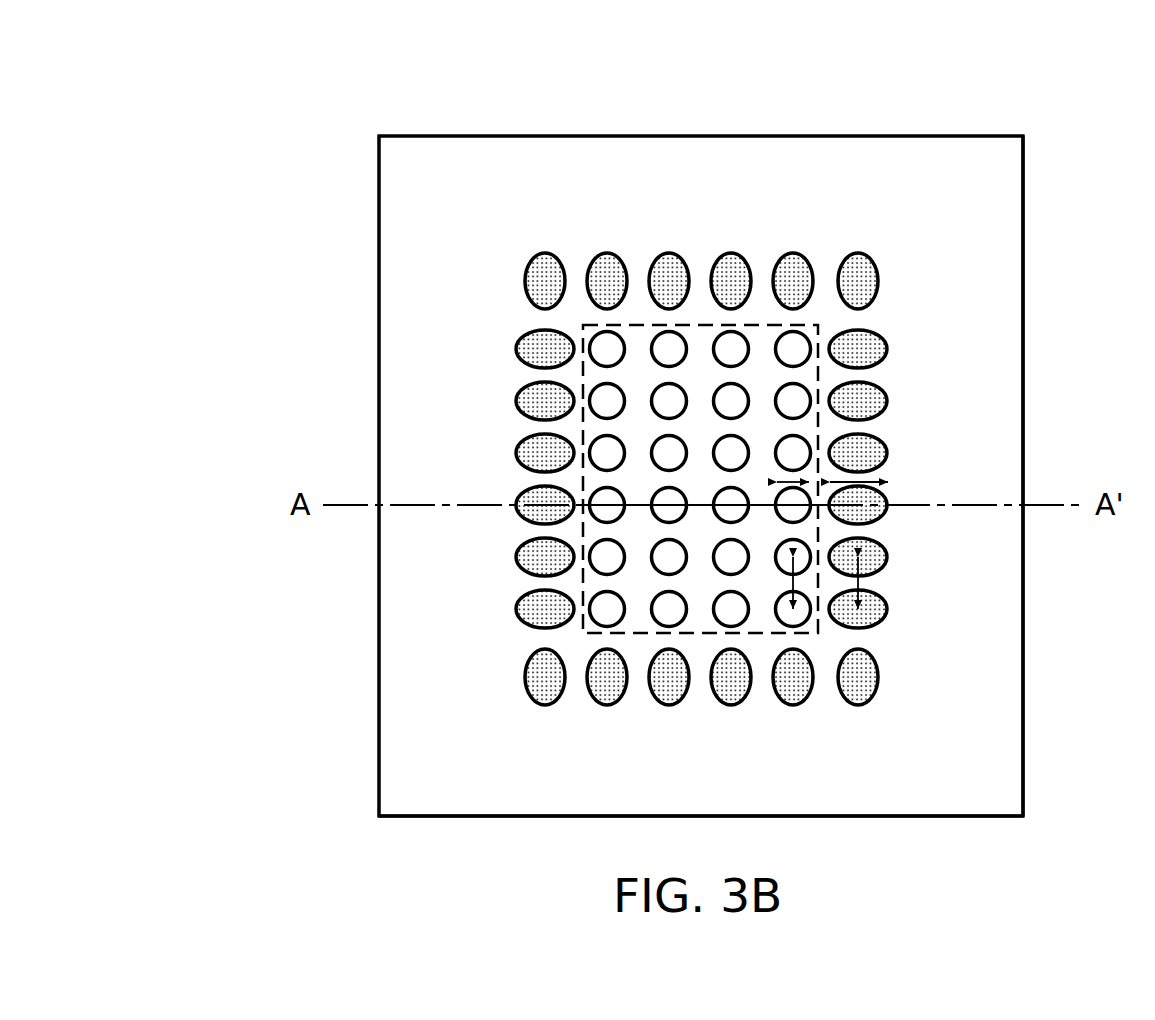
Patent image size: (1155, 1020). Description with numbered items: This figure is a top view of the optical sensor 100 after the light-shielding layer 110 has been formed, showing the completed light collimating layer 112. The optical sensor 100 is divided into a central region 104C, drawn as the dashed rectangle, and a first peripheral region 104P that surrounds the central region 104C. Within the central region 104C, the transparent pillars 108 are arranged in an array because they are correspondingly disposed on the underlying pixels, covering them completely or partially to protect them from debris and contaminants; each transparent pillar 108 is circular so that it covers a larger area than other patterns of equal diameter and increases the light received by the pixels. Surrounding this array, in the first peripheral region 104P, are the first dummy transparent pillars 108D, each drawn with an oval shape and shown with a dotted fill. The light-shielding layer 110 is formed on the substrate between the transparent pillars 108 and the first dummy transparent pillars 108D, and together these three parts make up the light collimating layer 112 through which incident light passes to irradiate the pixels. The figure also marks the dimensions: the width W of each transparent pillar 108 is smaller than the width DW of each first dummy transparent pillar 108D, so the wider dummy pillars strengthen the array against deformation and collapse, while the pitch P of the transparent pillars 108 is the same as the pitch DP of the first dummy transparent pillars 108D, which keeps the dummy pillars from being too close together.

The optical sensor 100 is at (328, 116).
The first peripheral region 104P is at (420, 183).
The central region 104C is at (612, 375).
The transparent pillars 108 is at (796, 349).
The first dummy transparent pillars 108D is at (866, 282).
The light-shielding layer 110 is at (1005, 793).
The light collimating layer 112 is at (1032, 338).
The width of each transparent pillar W is at (784, 482).
The width of each first dummy transparent pillar DW is at (889, 482).
The pitch of the transparent pillars P is at (793, 583).
The pitch of the first dummy transparent pillars DP is at (858, 583).